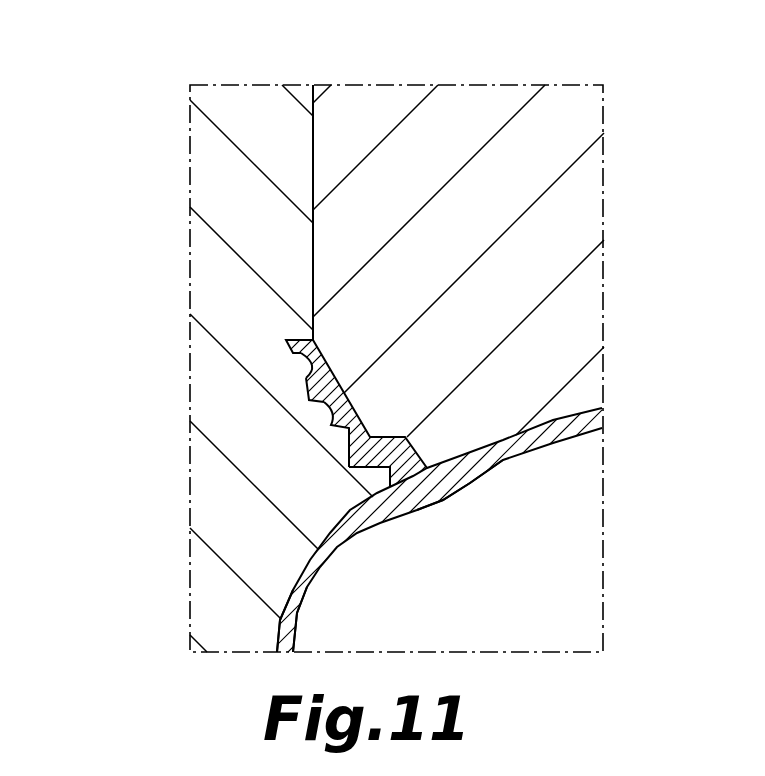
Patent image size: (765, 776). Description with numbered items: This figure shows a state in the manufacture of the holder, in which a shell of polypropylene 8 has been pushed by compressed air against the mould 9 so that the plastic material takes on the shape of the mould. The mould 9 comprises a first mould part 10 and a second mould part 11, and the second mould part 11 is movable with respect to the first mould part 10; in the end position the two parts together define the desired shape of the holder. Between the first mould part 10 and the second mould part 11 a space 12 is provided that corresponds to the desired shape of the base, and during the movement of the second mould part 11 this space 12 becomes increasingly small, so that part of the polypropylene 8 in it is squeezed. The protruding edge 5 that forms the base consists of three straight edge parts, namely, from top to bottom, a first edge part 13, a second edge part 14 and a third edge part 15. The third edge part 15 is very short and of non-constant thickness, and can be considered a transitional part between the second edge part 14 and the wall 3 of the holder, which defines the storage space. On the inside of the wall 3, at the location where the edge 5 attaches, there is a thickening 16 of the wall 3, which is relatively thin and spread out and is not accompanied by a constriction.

The mould 9 is at (243, 117).
The first mould part 10 is at (213, 173).
The second mould part 11 is at (545, 230).
The first edge part 13 is at (303, 350).
The space 12 is at (325, 388).
The protruding edge 5 is at (348, 417).
The second edge part 14 is at (383, 455).
The third edge part 15 is at (390, 482).
The wall 3 is at (335, 528).
The polypropylene 8 is at (290, 592).
The thickening 16 is at (437, 498).